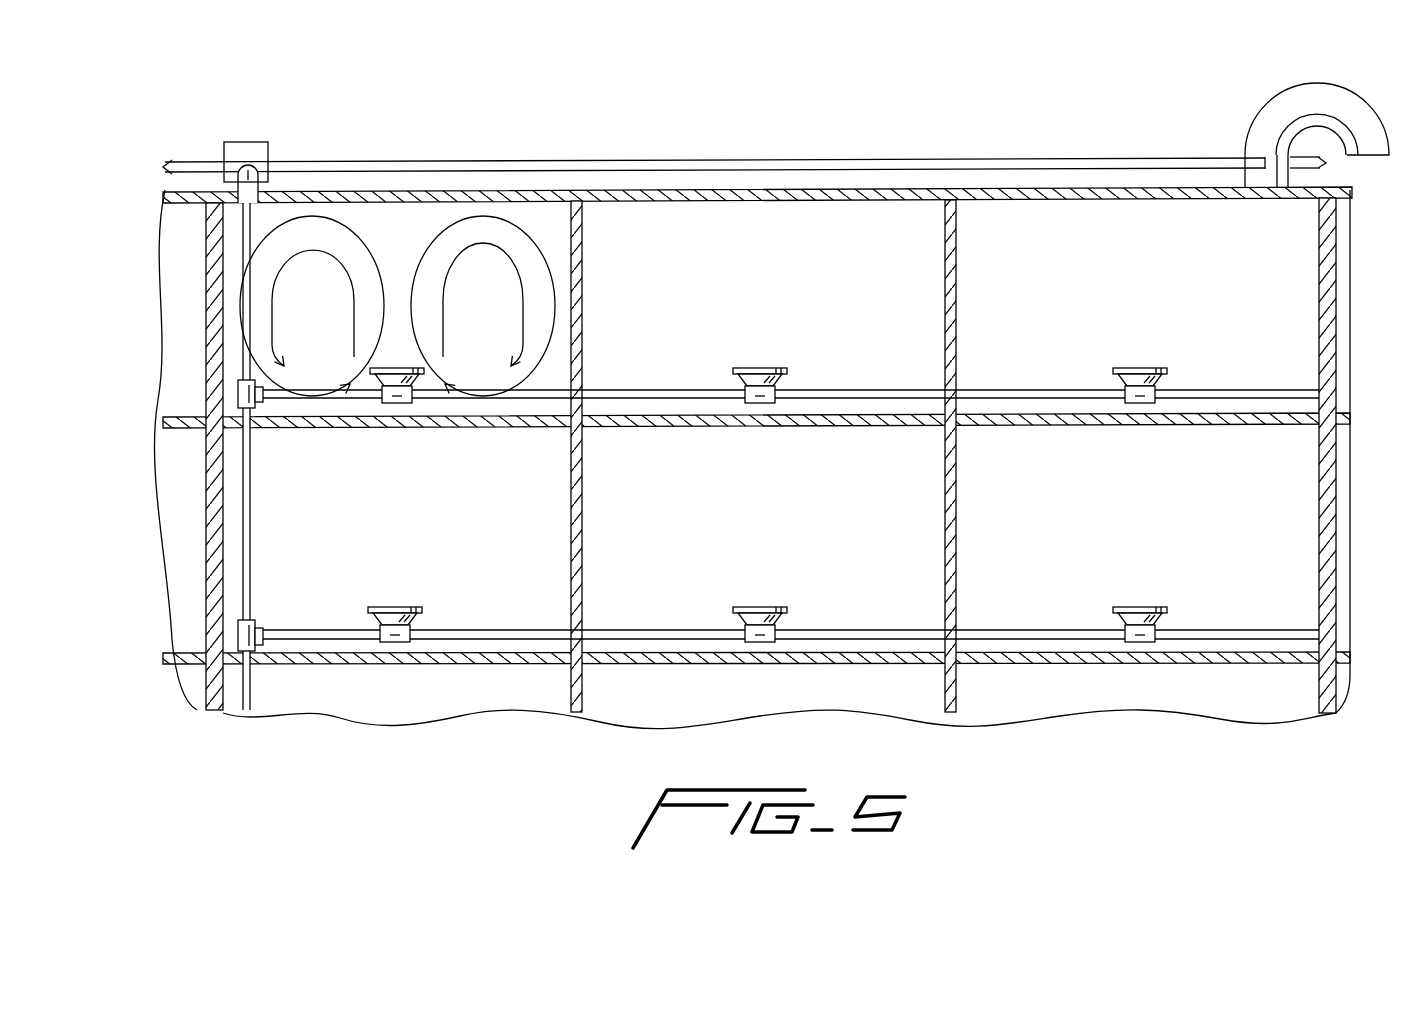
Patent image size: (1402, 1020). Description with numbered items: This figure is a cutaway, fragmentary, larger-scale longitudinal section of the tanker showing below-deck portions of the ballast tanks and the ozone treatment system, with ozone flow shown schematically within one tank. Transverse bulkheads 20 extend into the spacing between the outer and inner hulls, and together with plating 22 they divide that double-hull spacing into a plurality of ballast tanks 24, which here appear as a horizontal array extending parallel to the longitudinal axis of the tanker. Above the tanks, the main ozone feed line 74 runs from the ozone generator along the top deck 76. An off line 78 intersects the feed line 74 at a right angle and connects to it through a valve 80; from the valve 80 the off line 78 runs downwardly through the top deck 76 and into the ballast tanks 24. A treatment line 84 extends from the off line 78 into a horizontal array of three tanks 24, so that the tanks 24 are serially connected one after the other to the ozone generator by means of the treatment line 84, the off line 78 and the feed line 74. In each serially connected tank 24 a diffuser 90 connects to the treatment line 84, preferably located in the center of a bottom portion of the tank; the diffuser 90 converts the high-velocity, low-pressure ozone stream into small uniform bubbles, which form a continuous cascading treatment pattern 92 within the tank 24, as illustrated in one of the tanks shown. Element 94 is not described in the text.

The transverse bulkhead 20 is at (582, 320).
The plating 22 is at (870, 427).
The ballast tank 24 is at (612, 217).
The main ozone feed line 74 is at (663, 160).
The top deck 76 is at (868, 190).
The off line 78 is at (258, 183).
The valve 80 is at (268, 152).
The treatment line 84 is at (653, 388).
The diffuser 90 is at (397, 368).
The continuous cascading treatment pattern 92 is at (433, 255).
The vertical pipe / valve 94 is at (237, 390).